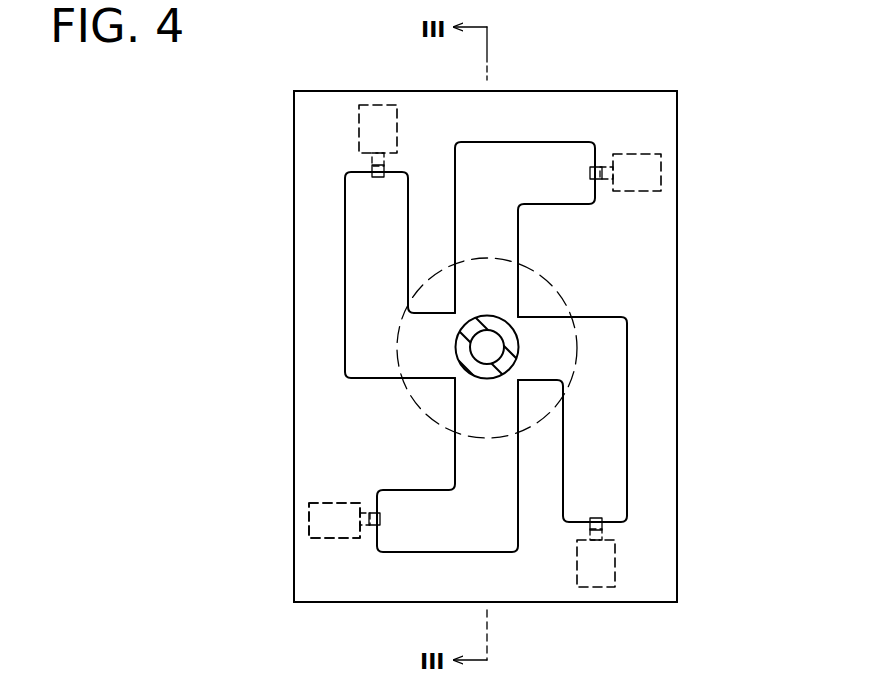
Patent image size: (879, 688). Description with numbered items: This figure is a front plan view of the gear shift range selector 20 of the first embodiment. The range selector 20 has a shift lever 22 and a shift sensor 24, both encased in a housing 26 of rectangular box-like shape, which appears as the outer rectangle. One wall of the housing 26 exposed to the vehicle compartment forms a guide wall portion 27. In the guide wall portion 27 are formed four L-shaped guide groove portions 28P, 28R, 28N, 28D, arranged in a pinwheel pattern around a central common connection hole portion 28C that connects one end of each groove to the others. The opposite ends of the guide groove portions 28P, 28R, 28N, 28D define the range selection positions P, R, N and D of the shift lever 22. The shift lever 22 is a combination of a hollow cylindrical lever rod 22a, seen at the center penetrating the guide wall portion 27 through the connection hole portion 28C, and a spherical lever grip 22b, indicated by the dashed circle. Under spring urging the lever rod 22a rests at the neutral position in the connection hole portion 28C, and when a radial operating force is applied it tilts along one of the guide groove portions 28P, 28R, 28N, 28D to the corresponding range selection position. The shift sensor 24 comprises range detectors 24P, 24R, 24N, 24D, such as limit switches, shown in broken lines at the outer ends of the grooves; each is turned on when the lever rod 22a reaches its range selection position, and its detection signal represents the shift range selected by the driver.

The range selector 20 is at (238, 166).
The shift lever 22 is at (523, 347).
The lever rod 22a is at (519, 349).
The lever grip 22b is at (568, 312).
The shift sensor 24 is at (308, 545).
The range detector 24P is at (378, 105).
The range detector 24R is at (662, 172).
The range detector 24N is at (616, 568).
The range detector 24D is at (342, 540).
The housing 26 is at (665, 113).
The guide wall portion 27 is at (485, 346).
The guide groove portion 28P is at (346, 337).
The guide groove portion 28R is at (456, 188).
The guide groove portion 28N is at (628, 368).
The guide groove portion 28D is at (518, 496).
The connection hole portion 28C is at (455, 380).